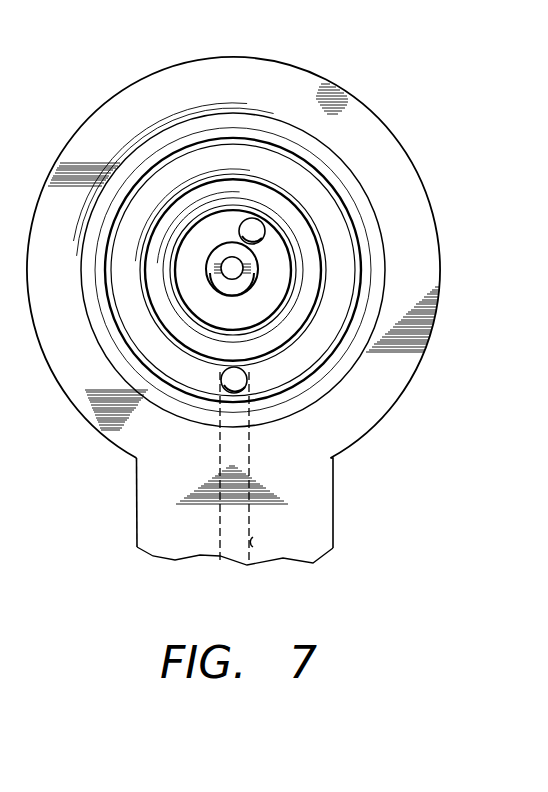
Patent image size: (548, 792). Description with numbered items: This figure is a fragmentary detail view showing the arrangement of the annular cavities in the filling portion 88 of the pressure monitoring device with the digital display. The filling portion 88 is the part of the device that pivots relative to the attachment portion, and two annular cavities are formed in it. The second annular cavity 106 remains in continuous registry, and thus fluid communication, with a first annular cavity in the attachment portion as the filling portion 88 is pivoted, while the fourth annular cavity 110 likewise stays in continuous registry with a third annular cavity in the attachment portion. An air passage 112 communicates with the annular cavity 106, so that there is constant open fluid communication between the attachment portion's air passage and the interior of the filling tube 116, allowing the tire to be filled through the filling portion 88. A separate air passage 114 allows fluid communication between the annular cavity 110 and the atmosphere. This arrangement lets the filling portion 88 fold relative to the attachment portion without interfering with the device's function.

The filling portion 88 is at (353, 455).
The second annular cavity 106 is at (347, 270).
The fourth annular cavity 110 is at (257, 310).
The air passage 112 is at (268, 543).
The air passage 114 is at (255, 224).
The filling tube 116 is at (152, 518).